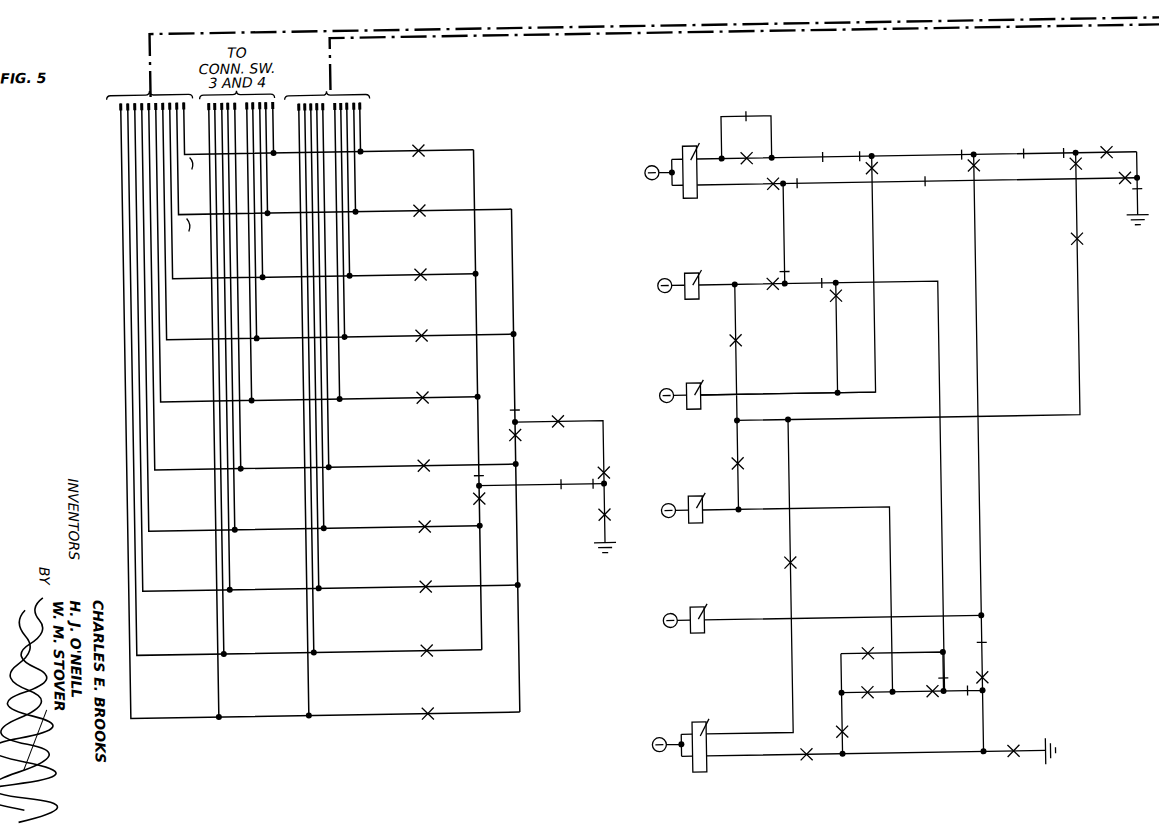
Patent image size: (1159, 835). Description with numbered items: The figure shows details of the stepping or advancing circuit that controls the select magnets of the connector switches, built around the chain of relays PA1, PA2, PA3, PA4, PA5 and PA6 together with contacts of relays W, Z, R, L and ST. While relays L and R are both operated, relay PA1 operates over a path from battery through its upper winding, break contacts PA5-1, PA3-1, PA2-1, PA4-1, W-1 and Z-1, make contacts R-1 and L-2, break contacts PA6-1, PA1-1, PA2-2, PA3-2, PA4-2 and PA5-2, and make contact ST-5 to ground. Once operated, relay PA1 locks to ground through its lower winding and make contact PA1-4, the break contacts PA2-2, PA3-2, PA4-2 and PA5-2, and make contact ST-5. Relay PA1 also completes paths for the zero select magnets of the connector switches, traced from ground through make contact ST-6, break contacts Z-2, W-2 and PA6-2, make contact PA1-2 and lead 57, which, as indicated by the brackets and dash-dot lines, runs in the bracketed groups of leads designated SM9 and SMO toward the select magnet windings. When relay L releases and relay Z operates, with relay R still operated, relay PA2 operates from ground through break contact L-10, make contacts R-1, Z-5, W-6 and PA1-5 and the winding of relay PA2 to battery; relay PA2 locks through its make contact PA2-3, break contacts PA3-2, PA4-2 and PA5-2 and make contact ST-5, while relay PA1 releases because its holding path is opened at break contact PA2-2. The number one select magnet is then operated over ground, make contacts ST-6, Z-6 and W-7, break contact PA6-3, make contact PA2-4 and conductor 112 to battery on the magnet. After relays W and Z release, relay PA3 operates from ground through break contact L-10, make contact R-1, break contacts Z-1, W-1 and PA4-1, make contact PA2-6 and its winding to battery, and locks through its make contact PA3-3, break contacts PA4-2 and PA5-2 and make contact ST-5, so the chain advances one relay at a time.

The relay PA1 is at (988, 648).
The relay PA2 is at (540, 397).
The relay PA3 is at (504, 376).
The relay PA4 is at (508, 408).
The relay PA5 is at (569, 365).
The relay PA6 is at (530, 443).
The break contact PA1-1 is at (802, 192).
The make contact PA1-2 is at (329, 129).
The make contact PA1-4 is at (775, 190).
The make contact PA1-5 is at (757, 340).
The break contact PA2-1 is at (865, 154).
The break contact PA2-2 is at (792, 275).
The make contact PA2-3 is at (772, 282).
The make contact PA2-4 is at (344, 159).
The make contact PA2-6 is at (881, 171).
The break contact PA3-1 is at (823, 149).
The break contact PA3-2 is at (828, 283).
The make contact PA3-3 is at (832, 302).
The break contact PA4-1 is at (961, 155).
The break contact PA4-2 is at (939, 684).
The break contact PA5-1 is at (746, 127).
The break contact PA5-2 is at (962, 702).
The break contact PA6-1 is at (928, 190).
The break contact PA6-2 is at (476, 475).
The break contact PA6-3 is at (518, 408).
The break contact W-1 is at (1023, 144).
The break contact W-2 is at (543, 478).
The make contact W-6 is at (1091, 238).
The make contact W-7 is at (566, 477).
The break contact Z-1 is at (1067, 155).
The break contact Z-2 is at (590, 489).
The make contact Z-5 is at (1075, 175).
The make contact Z-6 is at (609, 472).
The make contact ST-5 is at (1017, 743).
The make contact ST-6 is at (621, 514).
The make contact R-1 is at (1108, 143).
The make contact L-2 is at (1124, 187).
The break contact L-10 is at (1138, 198).
The stepping switch bank SM9 is at (124, 157).
The stepping switch bank SMO is at (188, 143).
The lead 57 is at (194, 173).
The conductor 112 is at (196, 234).